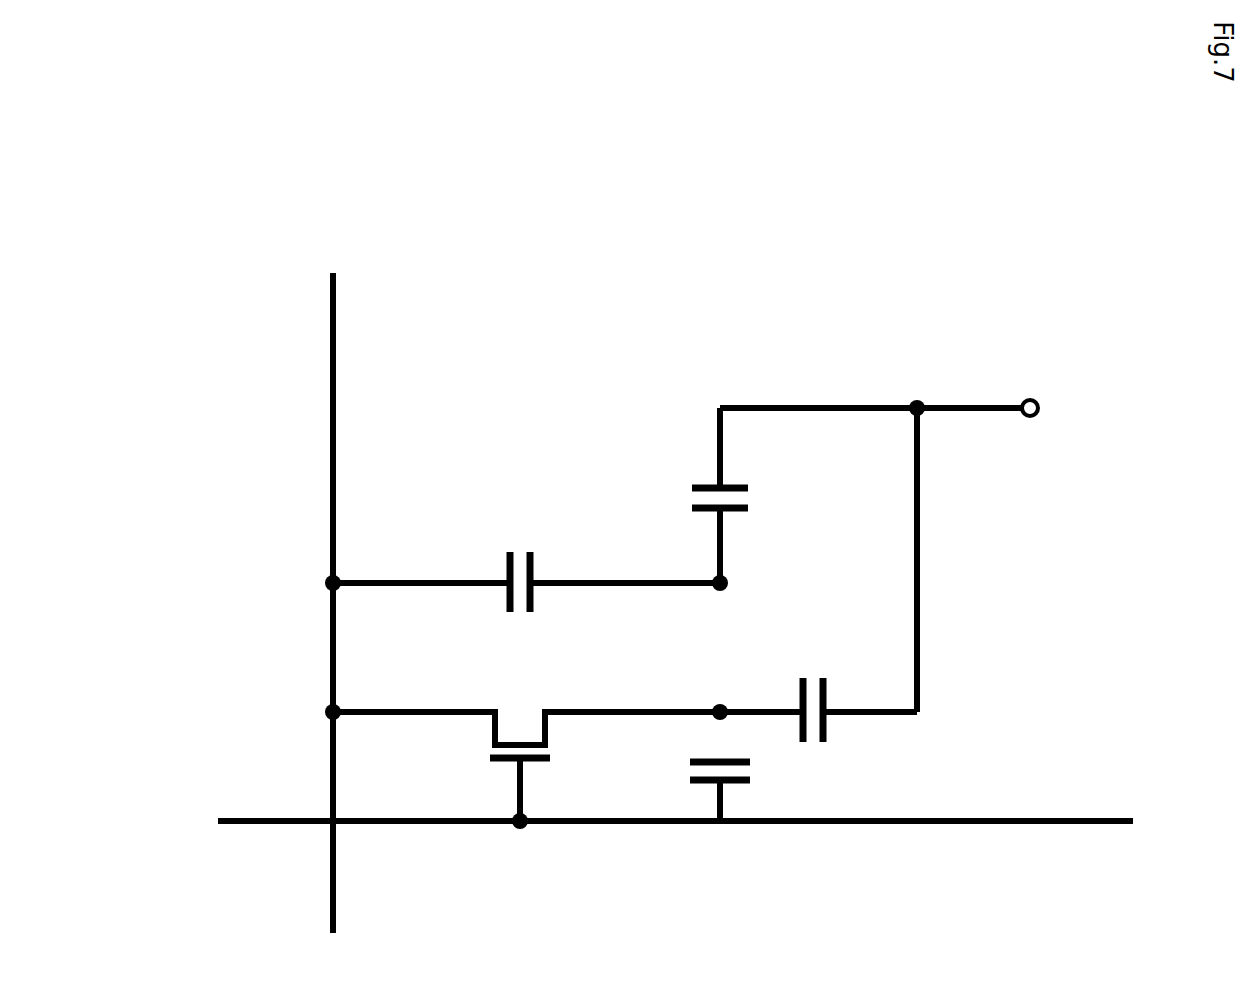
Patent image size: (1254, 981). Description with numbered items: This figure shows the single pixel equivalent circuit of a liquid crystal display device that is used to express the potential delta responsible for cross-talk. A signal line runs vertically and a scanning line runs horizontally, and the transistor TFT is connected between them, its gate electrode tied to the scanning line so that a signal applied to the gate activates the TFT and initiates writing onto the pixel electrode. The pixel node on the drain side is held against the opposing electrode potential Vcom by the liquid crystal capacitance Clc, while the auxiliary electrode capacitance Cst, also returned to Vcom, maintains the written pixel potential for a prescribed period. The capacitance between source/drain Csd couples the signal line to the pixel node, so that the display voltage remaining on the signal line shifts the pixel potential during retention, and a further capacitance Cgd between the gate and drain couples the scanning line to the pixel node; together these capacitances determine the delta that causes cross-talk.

The capacitance between source/drain Csd is at (526, 548).
The liquid crystal capacitance Clc is at (764, 495).
The auxiliary electrode capacitance Cst is at (818, 575).
The gate-drain capacitance Cgd is at (765, 766).
The element TFT is at (526, 744).
The opposing electrode potential Vcom is at (936, 405).